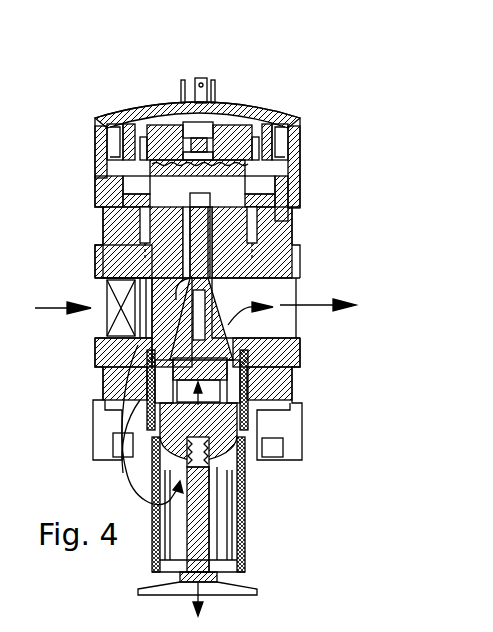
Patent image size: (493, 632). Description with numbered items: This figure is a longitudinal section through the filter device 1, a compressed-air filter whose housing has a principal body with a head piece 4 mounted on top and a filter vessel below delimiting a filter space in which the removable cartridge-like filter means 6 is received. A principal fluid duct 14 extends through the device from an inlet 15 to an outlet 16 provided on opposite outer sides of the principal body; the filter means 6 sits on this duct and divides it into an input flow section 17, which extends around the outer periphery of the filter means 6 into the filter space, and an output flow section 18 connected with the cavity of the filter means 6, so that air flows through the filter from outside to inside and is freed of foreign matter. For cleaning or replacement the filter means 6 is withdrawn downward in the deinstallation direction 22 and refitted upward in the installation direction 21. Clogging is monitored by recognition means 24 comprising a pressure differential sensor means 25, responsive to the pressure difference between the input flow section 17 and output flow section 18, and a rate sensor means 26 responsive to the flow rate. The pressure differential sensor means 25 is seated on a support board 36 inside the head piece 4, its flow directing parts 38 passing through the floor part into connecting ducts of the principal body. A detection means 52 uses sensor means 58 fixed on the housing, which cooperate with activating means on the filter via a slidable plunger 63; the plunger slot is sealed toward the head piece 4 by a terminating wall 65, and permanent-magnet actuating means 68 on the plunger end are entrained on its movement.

The filter device 1 is at (362, 228).
The head piece 4 is at (100, 118).
The filter means 6 is at (248, 483).
The principal fluid duct 14 is at (105, 242).
The inlet 15 is at (98, 290).
The outlet 16 is at (302, 316).
The input flow section 17 is at (102, 326).
The output flow section 18 is at (302, 332).
The installation direction 21 is at (232, 427).
The deinstallation direction 22 is at (200, 525).
The recognition means 24 is at (186, 118).
The pressure differential sensor means 25 is at (222, 118).
The rate sensor means 26 is at (98, 312).
The support board 36 is at (176, 118).
The flow directing parts 38 is at (140, 147).
The detection means 52 is at (296, 207).
The sensor means 58 is at (294, 160).
The plunger 63 is at (200, 245).
The terminating wall 65 is at (286, 181).
The actuating means 68 is at (190, 199).